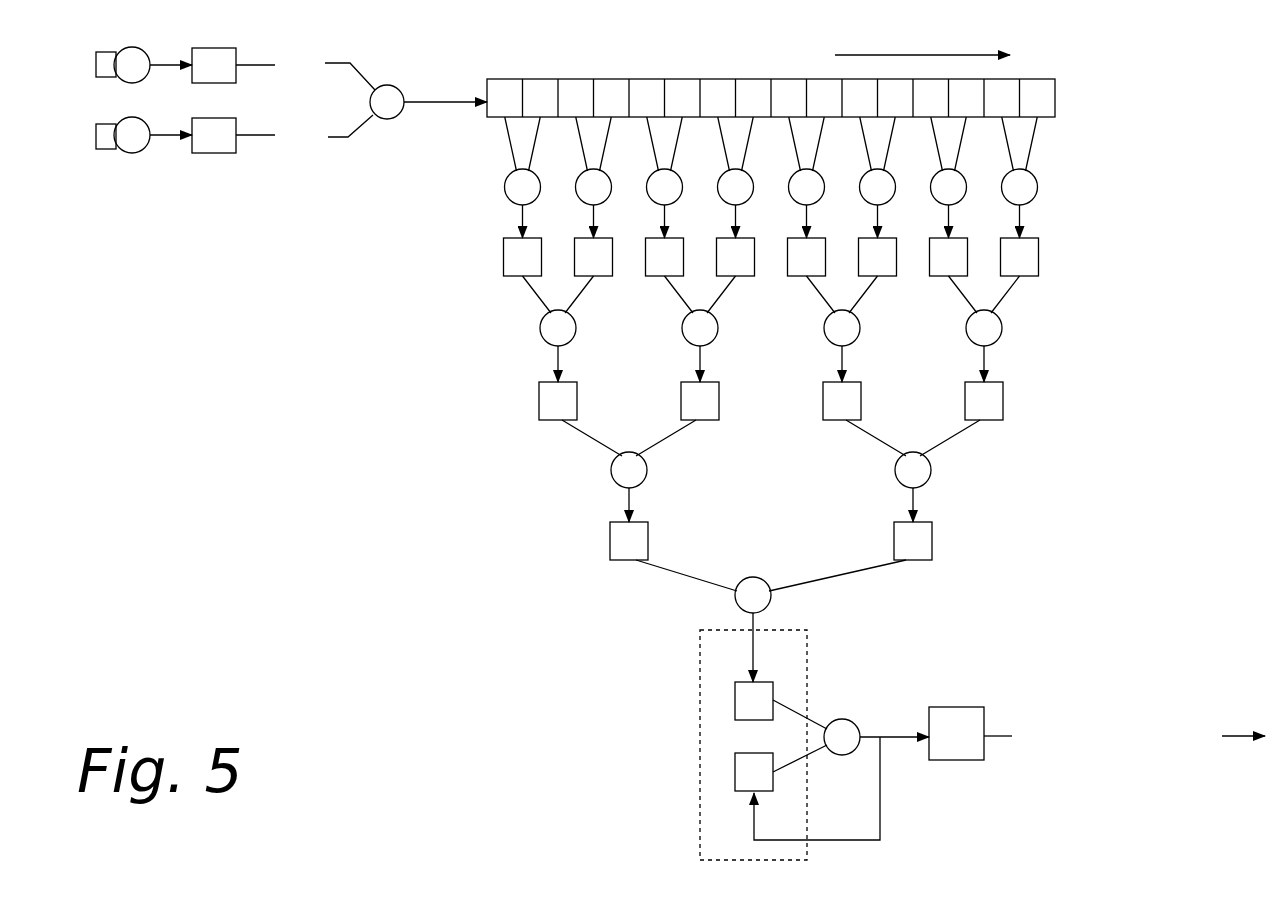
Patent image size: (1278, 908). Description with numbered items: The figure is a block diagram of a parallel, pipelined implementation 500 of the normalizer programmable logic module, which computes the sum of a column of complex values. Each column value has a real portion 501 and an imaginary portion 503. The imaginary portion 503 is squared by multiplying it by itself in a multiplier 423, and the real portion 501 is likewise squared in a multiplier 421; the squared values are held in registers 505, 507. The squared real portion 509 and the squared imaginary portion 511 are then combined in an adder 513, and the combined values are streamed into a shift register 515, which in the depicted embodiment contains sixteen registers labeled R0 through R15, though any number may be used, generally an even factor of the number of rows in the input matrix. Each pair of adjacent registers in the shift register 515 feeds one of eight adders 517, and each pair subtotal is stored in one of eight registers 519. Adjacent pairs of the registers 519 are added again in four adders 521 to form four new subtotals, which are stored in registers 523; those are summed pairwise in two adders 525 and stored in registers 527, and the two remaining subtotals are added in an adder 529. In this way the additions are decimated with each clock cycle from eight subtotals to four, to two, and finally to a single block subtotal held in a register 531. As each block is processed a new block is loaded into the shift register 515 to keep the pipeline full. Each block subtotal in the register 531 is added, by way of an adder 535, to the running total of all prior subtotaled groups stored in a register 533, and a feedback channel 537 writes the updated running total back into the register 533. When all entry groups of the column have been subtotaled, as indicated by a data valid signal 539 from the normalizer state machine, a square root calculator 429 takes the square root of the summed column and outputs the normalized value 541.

The parallel, pipelined implementation 500 is at (282, 512).
The real portion 501 is at (80, 164).
The imaginary portion 503 is at (80, 56).
The multiplier 421 is at (118, 153).
The multiplier 423 is at (118, 48).
The register 505 is at (197, 153).
The register 507 is at (197, 48).
The squared real portion 509 is at (295, 150).
The squared imaginary portion 511 is at (292, 56).
The adder 513 is at (383, 85).
The shift register 515 is at (565, 78).
The adders 517 is at (510, 171).
The registers 519 is at (503, 243).
The adders 521 is at (545, 314).
The registers 523 is at (540, 384).
The adders 525 is at (643, 483).
The registers 527 is at (610, 547).
The adder 529 is at (742, 584).
The register 531 is at (763, 682).
The register 533 is at (773, 780).
The adder 535 is at (838, 720).
The feedback channel 537 is at (840, 845).
The data valid signal 539 is at (700, 765).
The square root calculator 429 is at (937, 706).
The normalized value 541 is at (1237, 733).